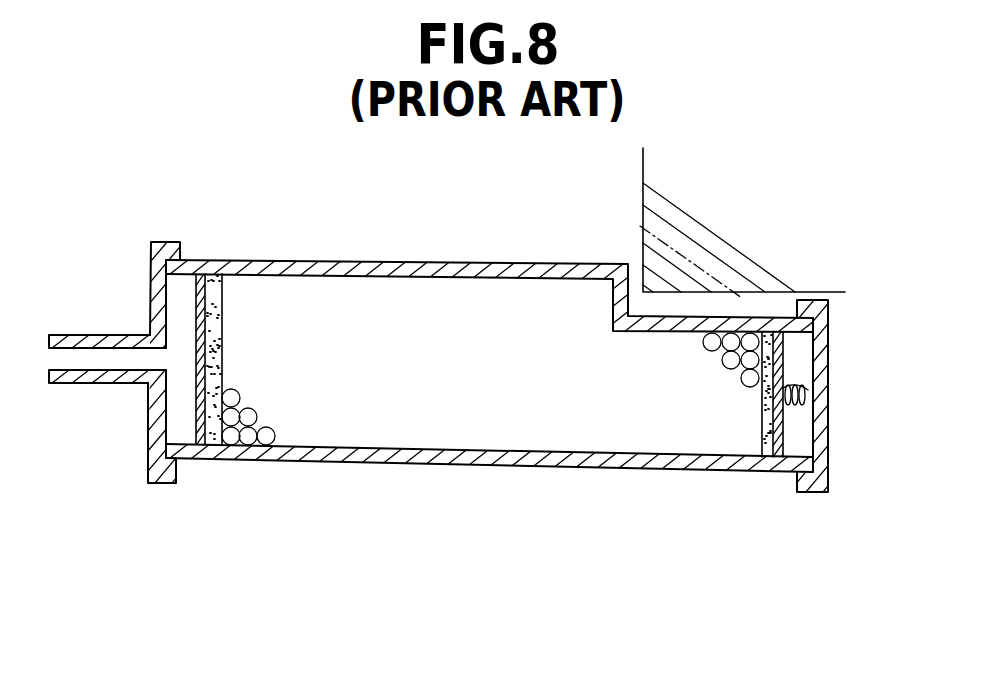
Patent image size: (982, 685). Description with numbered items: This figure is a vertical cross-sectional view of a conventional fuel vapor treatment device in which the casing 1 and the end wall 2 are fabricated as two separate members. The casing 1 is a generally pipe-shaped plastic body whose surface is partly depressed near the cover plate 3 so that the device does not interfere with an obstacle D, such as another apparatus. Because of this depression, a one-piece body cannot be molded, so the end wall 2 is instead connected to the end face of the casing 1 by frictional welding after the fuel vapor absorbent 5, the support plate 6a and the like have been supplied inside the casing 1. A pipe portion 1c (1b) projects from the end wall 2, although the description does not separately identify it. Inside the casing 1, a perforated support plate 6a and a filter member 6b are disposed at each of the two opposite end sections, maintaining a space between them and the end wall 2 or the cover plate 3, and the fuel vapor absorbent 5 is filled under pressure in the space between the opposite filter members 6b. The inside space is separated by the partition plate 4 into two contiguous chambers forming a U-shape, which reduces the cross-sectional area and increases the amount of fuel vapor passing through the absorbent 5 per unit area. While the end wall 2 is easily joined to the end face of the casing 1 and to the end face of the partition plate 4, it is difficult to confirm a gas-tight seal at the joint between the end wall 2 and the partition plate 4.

The casing 1 is at (463, 262).
The inlet port 1b is at (99, 396).
The inlet tube 1c is at (97, 381).
The end wall 2 is at (150, 281).
The cover plate 3 is at (830, 357).
The partition plate 4 is at (625, 418).
The fuel vapor absorbent 5 is at (247, 417).
The perforated support plate 6a is at (198, 300).
The filter member 6b is at (222, 337).
The obstacle D is at (688, 245).